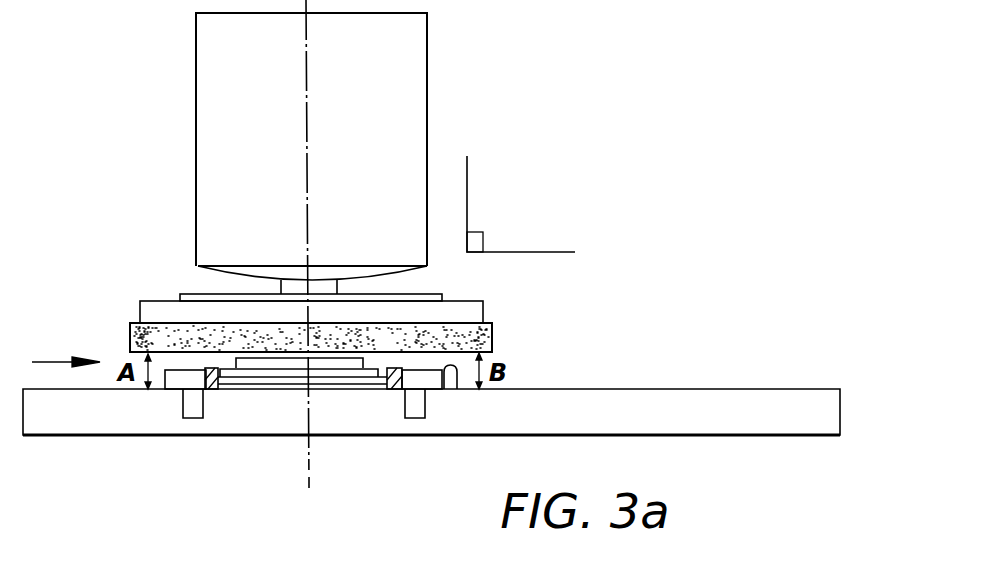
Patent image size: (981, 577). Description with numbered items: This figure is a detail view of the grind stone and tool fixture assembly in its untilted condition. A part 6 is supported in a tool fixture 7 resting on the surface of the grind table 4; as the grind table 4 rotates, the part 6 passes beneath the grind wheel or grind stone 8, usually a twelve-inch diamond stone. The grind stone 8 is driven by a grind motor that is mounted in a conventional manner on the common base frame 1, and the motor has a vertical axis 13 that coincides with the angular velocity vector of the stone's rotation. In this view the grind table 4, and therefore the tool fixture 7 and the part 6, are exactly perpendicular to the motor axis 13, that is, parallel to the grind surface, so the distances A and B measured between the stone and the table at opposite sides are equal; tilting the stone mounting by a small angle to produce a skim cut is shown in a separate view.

The common base frame 1 is at (200, 108).
The vertical axis 13 is at (308, 63).
The grind stone 8 is at (492, 333).
The tool fixture 7 is at (176, 380).
The part 6 is at (455, 389).
The grind table 4 is at (48, 425).